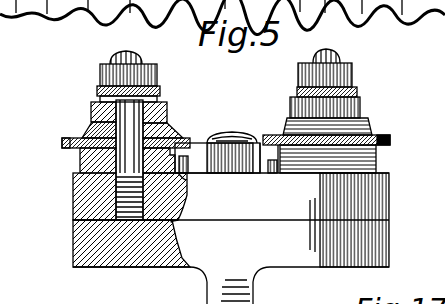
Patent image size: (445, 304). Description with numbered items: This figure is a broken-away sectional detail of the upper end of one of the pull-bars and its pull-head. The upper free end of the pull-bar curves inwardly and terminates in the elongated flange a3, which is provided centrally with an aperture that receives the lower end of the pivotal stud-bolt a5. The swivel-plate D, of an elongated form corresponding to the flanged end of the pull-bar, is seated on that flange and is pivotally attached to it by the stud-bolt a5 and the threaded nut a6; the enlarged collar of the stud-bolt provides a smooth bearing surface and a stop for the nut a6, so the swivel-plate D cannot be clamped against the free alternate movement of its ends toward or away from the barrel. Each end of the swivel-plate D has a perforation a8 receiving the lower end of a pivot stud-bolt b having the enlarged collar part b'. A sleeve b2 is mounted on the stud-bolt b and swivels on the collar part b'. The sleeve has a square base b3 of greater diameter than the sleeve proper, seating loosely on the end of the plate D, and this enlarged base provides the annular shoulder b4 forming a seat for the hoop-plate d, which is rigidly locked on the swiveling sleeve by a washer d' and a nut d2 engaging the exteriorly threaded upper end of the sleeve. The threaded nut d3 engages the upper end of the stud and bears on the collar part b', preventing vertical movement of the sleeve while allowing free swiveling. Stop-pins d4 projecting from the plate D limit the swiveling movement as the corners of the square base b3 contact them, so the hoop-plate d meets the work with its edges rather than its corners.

The swivel-plate D is at (73, 200).
The elongated flange a3 is at (73, 265).
The pivotal stud-bolt a5 is at (230, 120).
The threaded nut a6 is at (240, 162).
The perforation a8 is at (167, 222).
The pivot stud-bolt b is at (201, 142).
The collar part b' is at (105, 161).
The sleeve b2 is at (170, 126).
The square base b3 is at (178, 176).
The annular shoulder b4 is at (62, 143).
The hoop-plate d is at (231, 134).
The washer d' is at (210, 116).
The nut d2 is at (93, 106).
The threaded nut d3 is at (135, 82).
The stop-pin d4 is at (183, 156).